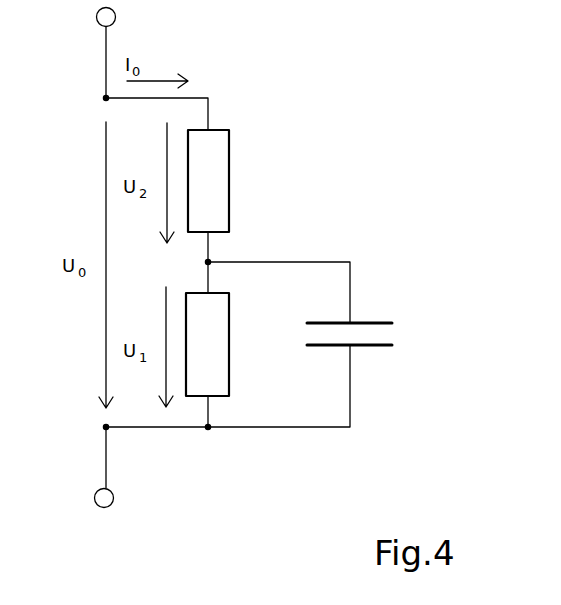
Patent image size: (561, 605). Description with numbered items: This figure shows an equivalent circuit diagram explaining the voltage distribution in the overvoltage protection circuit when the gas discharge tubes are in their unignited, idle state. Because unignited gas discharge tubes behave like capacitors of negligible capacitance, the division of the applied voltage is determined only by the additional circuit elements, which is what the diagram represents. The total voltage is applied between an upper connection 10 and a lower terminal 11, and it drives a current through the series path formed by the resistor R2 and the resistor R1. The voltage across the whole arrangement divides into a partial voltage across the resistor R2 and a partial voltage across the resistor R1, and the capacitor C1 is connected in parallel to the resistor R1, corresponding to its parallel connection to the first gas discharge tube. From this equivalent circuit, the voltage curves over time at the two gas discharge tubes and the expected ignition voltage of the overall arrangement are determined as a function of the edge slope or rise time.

The connection 10 is at (114, 16).
The ground terminal 11 is at (110, 506).
The resistor R1 is at (207, 337).
The resistor R2 is at (213, 170).
The capacitor C1 is at (356, 315).